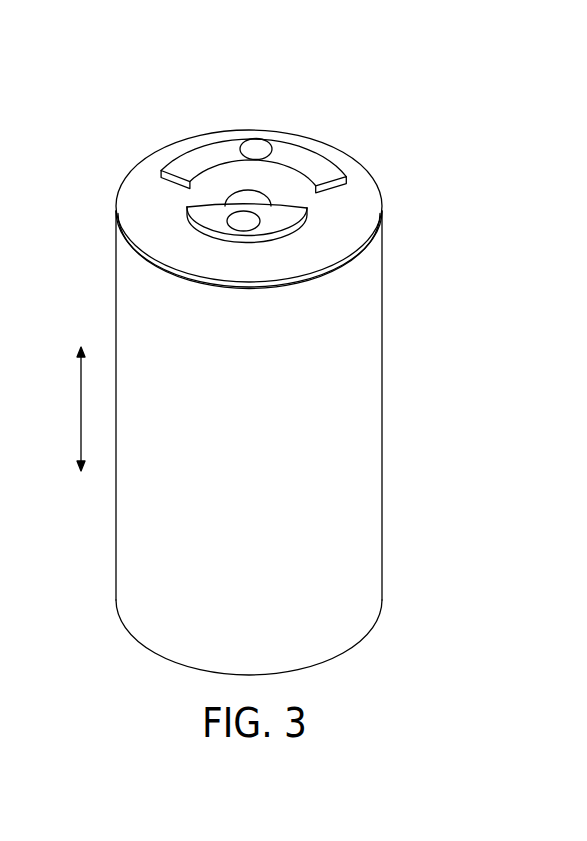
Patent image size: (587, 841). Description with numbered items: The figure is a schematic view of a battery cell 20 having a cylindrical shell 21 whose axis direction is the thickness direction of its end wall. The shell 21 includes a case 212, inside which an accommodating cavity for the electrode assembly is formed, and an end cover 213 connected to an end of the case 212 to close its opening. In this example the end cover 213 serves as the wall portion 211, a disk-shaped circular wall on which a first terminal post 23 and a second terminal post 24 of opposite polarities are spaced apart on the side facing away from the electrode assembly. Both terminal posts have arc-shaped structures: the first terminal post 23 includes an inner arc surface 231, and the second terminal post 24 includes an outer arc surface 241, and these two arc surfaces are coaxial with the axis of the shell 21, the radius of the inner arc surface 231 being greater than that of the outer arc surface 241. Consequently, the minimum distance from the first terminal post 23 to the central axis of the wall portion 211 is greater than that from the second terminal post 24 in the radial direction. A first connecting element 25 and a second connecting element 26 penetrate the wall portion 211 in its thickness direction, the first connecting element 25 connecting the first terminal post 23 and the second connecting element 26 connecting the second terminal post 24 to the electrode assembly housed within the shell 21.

The battery cell 20 is at (270, 24).
The shell 21 is at (492, 111).
The case 212 is at (355, 408).
The end cover 213 is at (358, 200).
The wall portion 211 is at (249, 209).
The first terminal post 23 is at (192, 163).
The inner arc surface 231 is at (287, 164).
The first connecting element 25 is at (256, 148).
The second terminal post 24 is at (207, 212).
The outer arc surface 241 is at (191, 223).
The second connecting element 26 is at (245, 222).